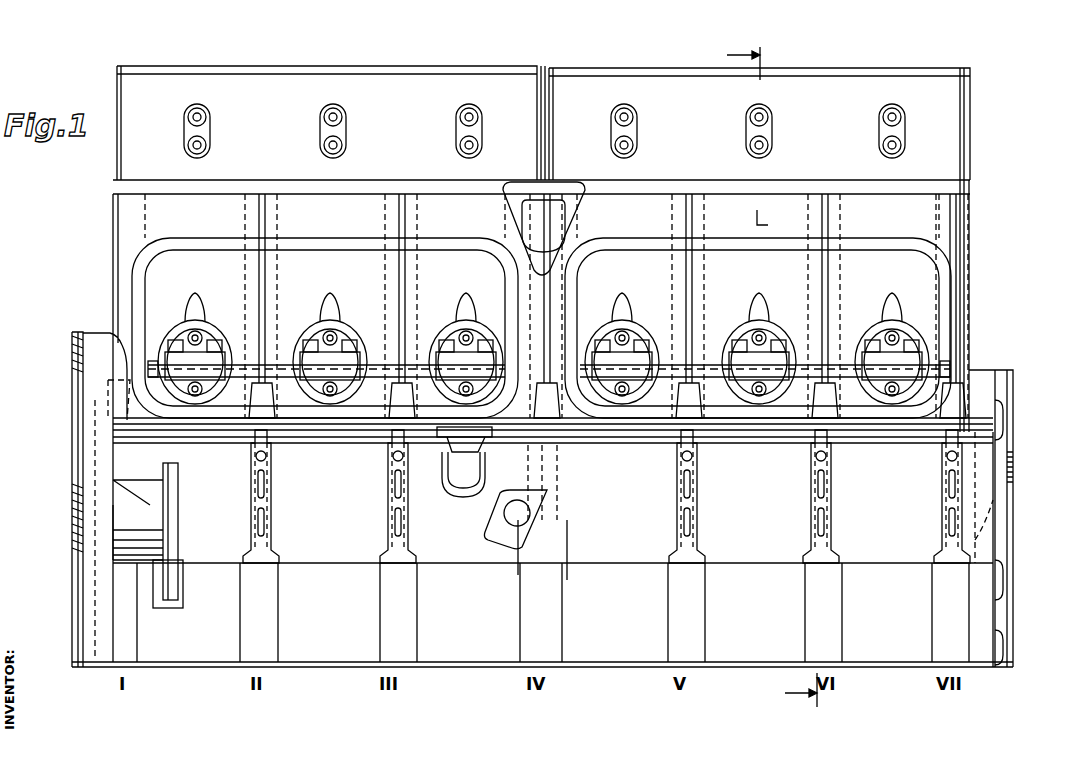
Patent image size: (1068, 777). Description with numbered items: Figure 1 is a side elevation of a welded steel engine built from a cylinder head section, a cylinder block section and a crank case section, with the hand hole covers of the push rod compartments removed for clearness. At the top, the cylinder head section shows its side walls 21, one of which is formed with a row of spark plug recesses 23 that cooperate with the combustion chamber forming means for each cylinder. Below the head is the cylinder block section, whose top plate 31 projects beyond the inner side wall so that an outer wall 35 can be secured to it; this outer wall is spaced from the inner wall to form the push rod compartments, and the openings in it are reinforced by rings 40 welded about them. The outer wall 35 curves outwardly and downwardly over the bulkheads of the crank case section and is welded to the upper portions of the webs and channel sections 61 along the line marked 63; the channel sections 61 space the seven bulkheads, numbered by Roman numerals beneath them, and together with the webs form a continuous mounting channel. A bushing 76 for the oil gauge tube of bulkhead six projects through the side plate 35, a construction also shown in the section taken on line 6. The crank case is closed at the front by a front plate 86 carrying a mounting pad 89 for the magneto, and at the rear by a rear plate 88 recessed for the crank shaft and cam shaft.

The side walls 21 is at (352, 83).
The spark plug recesses 23 is at (207, 130).
The section line 6- 6 is at (772, 374).
The top plate 31 is at (955, 190).
The outer wall 35 is at (920, 222).
The rings 40 is at (140, 265).
The front plate 86 is at (78, 418).
The rear plate 88 is at (1003, 370).
The mounting pad 89 is at (172, 507).
The bushing 76 is at (812, 455).
The weld 63 is at (330, 562).
The channel sections 61 is at (196, 645).